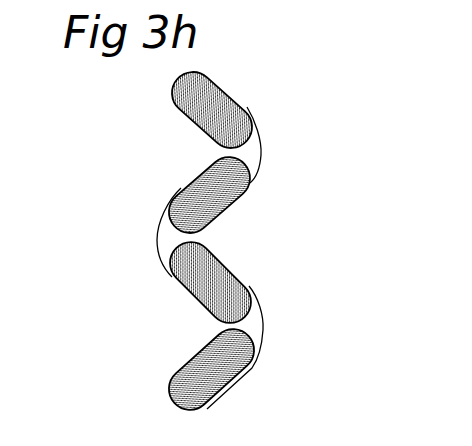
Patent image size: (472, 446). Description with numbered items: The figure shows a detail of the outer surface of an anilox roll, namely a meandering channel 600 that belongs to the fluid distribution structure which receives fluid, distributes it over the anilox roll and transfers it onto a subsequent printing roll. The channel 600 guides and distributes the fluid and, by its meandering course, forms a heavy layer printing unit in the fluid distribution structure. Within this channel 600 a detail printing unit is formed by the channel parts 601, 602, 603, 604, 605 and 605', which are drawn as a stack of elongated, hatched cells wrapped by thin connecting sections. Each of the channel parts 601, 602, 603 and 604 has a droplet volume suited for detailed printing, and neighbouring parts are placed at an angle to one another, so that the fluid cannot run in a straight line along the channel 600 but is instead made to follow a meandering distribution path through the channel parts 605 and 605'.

The channel 600 is at (255, 104).
The channel part 601 is at (200, 112).
The channel part 602 is at (197, 193).
The channel part 603 is at (228, 285).
The channel part 604 is at (190, 373).
The channel part 605 is at (130, 232).
The channel part 605' is at (280, 347).